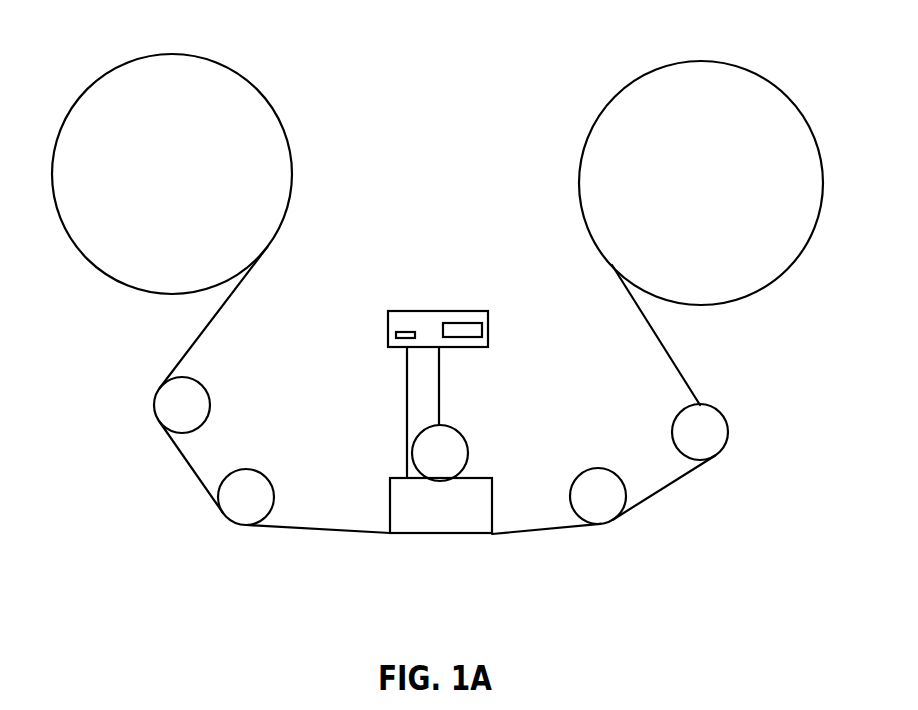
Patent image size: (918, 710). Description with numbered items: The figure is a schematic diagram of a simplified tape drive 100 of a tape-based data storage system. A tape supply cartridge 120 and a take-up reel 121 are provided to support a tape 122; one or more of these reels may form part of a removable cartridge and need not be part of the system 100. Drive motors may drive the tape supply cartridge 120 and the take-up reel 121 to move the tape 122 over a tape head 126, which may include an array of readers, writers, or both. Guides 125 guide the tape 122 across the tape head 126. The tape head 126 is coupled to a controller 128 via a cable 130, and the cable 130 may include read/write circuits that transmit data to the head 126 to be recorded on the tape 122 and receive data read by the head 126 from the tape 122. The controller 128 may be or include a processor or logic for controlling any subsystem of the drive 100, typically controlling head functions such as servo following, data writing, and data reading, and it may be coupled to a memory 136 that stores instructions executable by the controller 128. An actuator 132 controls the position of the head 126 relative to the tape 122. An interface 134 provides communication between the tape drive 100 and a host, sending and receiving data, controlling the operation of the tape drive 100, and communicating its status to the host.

The tape drive 100 is at (125, 336).
The tape supply cartridge 120 is at (291, 150).
The take-up reel 121 is at (777, 280).
The tape 122 is at (323, 533).
The guides 125 is at (247, 468).
The tape head 126 is at (492, 505).
The controller 128 is at (437, 310).
The cable 130 is at (407, 450).
The actuator 132 is at (460, 433).
The interface 134 is at (470, 323).
The memory 136 is at (404, 331).